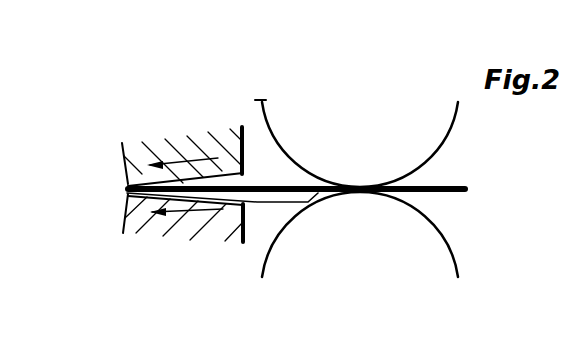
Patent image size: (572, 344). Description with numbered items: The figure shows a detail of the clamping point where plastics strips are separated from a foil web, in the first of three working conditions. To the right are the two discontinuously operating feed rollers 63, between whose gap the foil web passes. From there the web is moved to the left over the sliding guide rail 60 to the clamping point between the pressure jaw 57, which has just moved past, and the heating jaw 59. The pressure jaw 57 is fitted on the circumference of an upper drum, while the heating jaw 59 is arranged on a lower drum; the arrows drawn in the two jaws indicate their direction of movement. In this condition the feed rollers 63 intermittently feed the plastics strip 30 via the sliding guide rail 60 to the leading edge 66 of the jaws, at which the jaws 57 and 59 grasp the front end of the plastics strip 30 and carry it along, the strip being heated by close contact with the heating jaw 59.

The plastics strip 30 is at (252, 186).
The pressure jaw 57 is at (181, 147).
The heating jaw 59 is at (157, 222).
The sliding guide rail 60 is at (277, 201).
The feed rollers 63 is at (445, 257).
The leading edge 66 is at (128, 188).